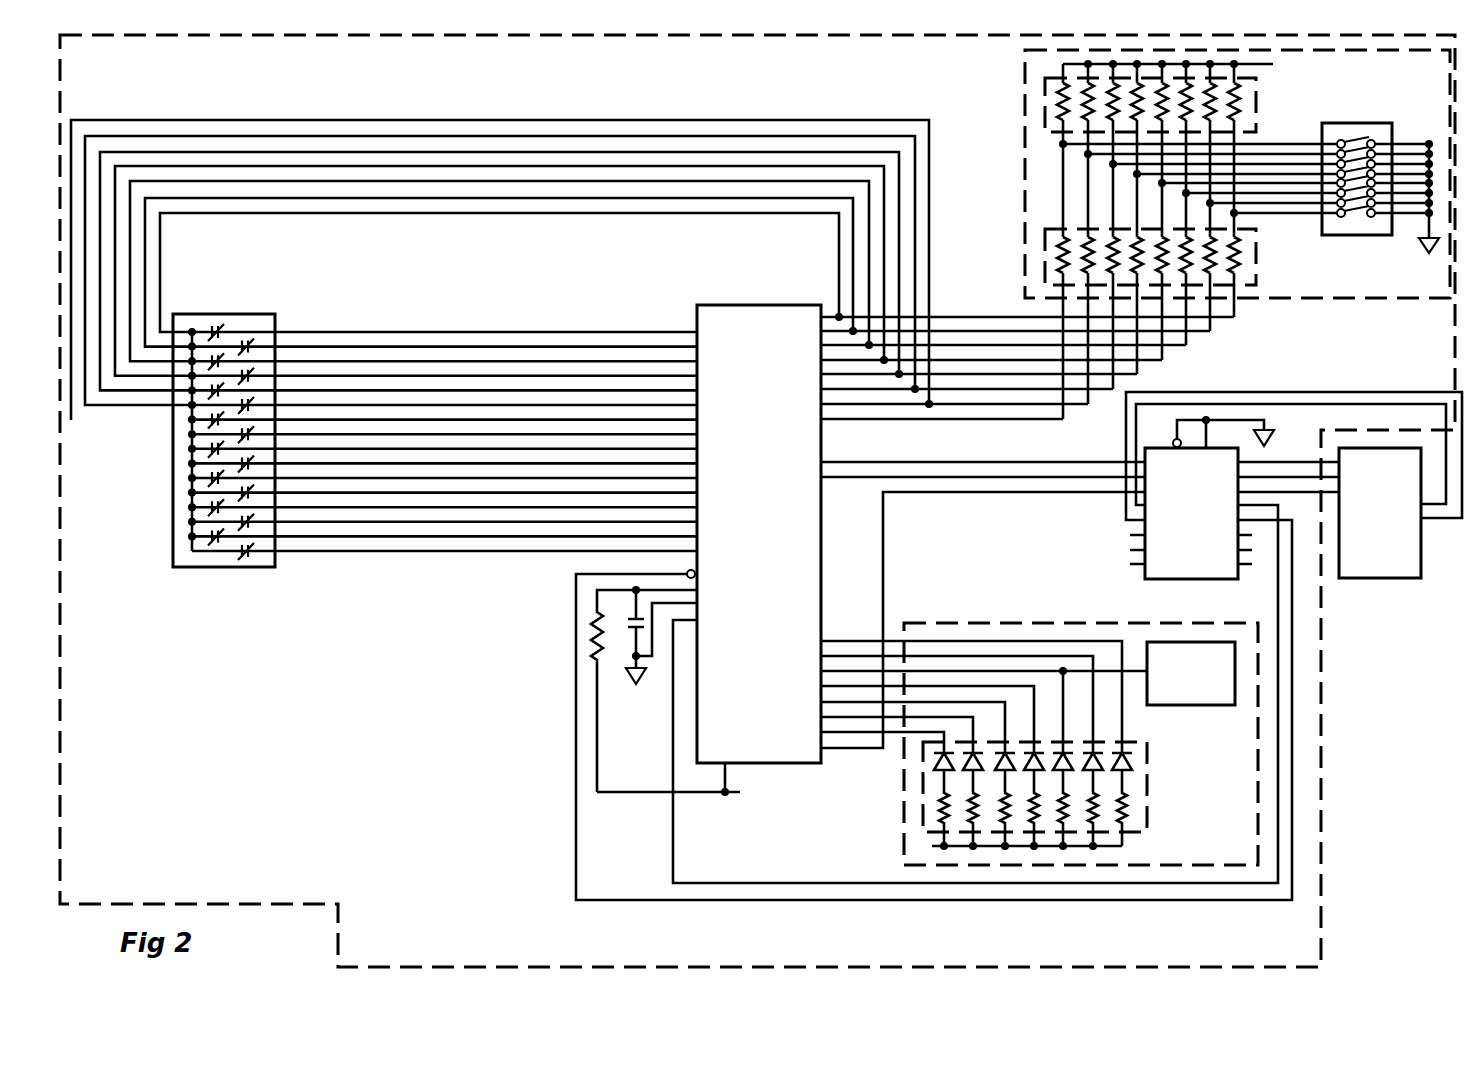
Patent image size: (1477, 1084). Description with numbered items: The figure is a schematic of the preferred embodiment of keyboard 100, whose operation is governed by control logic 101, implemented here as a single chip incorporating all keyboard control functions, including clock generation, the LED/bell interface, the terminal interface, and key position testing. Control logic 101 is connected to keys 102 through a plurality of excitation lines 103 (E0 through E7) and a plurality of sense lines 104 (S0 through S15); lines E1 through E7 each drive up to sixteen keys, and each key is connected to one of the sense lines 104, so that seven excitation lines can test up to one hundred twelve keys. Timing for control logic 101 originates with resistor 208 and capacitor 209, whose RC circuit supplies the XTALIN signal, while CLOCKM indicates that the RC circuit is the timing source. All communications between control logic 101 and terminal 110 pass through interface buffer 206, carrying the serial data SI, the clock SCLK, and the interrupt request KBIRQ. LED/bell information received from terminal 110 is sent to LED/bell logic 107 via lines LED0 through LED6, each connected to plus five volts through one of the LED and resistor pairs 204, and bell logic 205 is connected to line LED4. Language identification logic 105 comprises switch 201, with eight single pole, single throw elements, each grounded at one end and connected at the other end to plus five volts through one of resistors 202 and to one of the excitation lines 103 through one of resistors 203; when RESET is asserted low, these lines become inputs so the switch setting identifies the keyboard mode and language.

The keyboard 100 is at (300, 38).
The control logic 101 is at (780, 305).
The keys 102 is at (300, 289).
The excitation lines 103 is at (520, 213).
The sense lines 104 is at (528, 330).
The language identification logic 105 is at (1217, 234).
The LED/bell logic 107 is at (1039, 729).
The terminal 110 is at (1412, 578).
The switch 201 is at (1380, 123).
The resistors 202 is at (1290, 108).
The resistors 203 is at (1290, 250).
The LED and resistor pairs 204 is at (1147, 778).
The bell logic 205 is at (1218, 705).
The interface buffer 206 is at (1208, 579).
The resistor 208 is at (597, 626).
The capacitor 209 is at (630, 620).